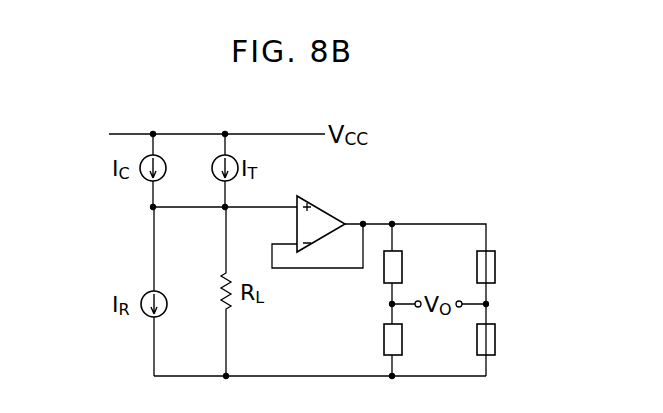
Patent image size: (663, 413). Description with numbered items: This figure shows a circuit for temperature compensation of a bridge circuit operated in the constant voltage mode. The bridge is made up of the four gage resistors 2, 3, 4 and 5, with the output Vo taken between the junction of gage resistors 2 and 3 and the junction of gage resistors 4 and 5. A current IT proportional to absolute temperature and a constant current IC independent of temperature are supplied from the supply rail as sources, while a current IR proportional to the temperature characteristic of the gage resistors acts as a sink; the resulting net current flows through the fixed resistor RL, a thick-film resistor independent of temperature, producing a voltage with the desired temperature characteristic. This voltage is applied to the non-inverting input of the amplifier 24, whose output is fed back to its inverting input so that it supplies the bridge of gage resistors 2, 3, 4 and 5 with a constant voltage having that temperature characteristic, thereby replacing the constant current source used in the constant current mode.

The amplifier 24 is at (323, 216).
The gage resistor 2 is at (402, 257).
The gage resistor 3 is at (402, 343).
The gage resistor 4 is at (477, 339).
The gage resistor 5 is at (477, 270).